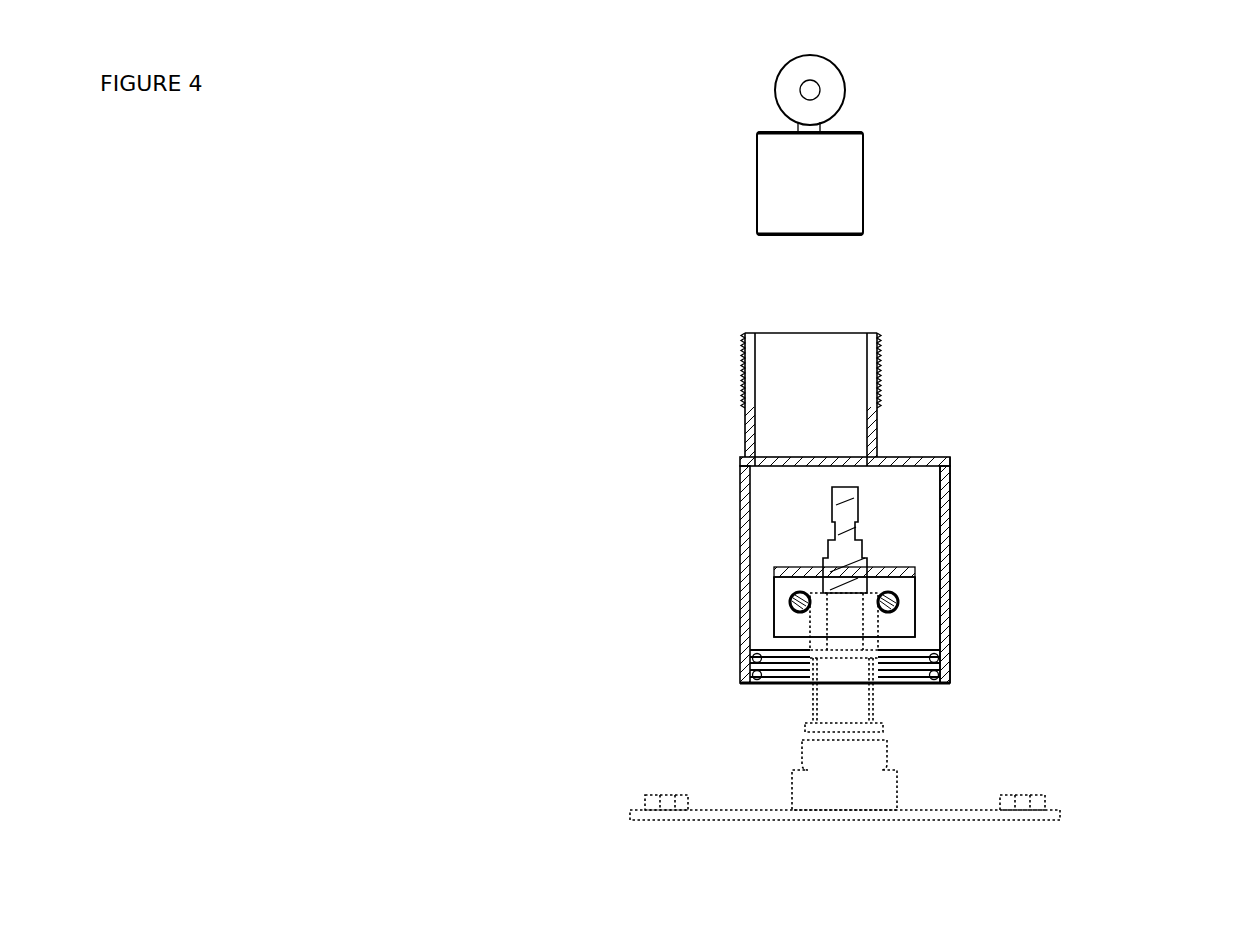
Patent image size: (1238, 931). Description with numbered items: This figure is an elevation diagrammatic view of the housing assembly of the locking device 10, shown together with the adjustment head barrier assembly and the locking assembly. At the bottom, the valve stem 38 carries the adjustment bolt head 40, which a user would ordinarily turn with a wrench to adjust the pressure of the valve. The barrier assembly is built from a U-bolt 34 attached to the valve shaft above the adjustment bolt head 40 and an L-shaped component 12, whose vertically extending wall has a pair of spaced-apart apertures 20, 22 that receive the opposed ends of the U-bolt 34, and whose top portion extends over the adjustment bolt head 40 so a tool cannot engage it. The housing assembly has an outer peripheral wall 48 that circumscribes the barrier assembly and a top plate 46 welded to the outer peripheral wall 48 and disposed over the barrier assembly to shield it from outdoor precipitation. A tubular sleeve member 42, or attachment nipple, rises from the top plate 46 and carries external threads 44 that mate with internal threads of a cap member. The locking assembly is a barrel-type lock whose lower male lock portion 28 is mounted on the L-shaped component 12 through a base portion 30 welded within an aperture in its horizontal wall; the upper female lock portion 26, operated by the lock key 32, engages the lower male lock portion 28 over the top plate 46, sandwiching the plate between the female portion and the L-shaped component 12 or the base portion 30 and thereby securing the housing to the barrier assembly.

The locking device 10 is at (664, 340).
The L-shaped component 12 is at (905, 625).
The aperture 20 is at (775, 595).
The aperture 22 is at (775, 597).
The upper female lock portion 26 is at (838, 198).
The lower male lock portion 28 is at (862, 530).
The base portion 30 is at (835, 572).
The lock key 32 is at (828, 100).
The U-bolt 34 is at (853, 600).
The valve stem 38 is at (870, 775).
The adjustment bolt head 40 is at (842, 643).
The tubular sleeve member 42 is at (745, 412).
The external threads 44 is at (878, 340).
The top plate 46 is at (905, 452).
The outer peripheral wall 48 is at (942, 568).